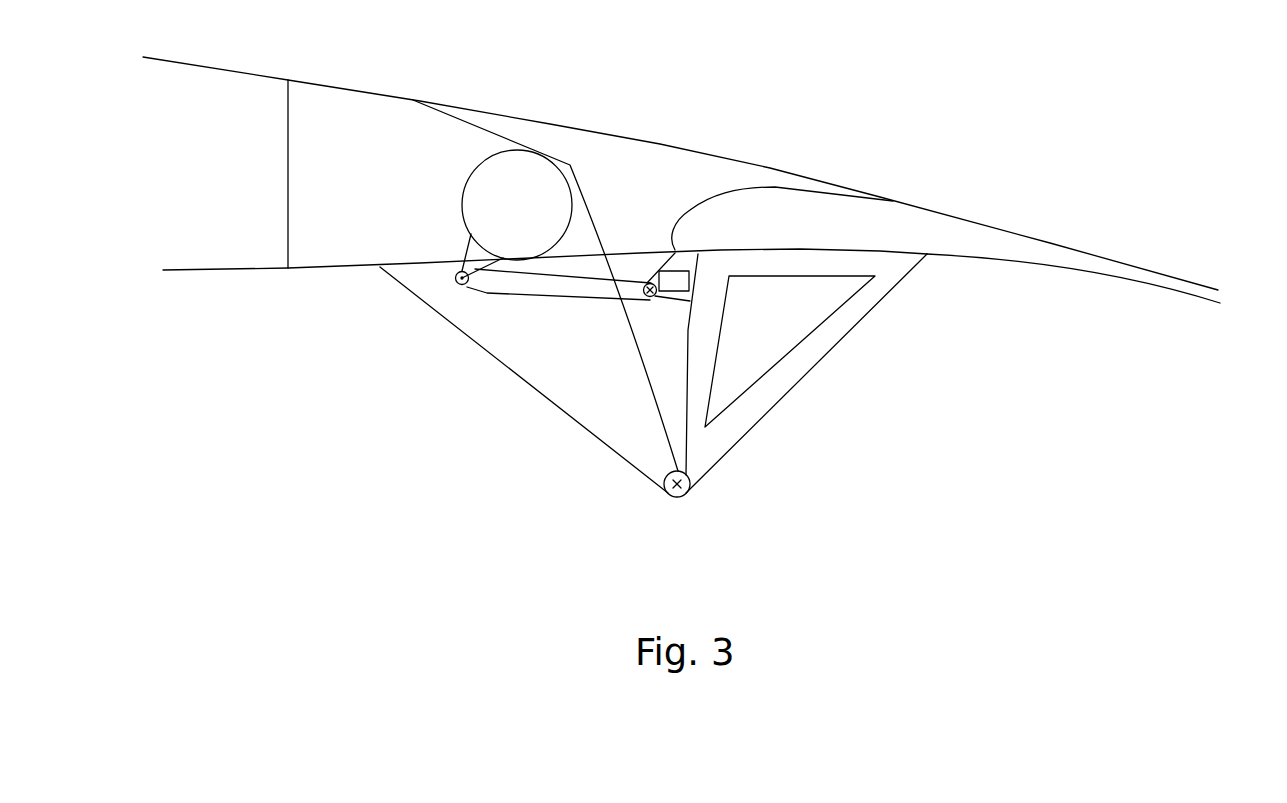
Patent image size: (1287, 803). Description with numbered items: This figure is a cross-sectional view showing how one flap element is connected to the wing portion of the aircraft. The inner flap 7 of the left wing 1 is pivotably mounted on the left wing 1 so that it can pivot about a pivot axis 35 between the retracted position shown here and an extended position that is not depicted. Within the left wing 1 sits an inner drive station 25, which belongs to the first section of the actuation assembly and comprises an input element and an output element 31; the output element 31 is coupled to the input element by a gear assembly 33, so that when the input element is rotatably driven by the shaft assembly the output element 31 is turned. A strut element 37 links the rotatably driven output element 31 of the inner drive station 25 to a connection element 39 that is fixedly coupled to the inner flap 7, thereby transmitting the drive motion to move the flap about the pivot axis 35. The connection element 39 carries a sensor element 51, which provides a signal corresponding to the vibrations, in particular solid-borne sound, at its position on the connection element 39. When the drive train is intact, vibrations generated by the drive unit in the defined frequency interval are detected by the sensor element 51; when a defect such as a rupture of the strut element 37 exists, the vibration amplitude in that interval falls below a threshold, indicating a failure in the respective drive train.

The left wing 1 is at (237, 188).
The inner flap 7 is at (833, 236).
The inner drive station 25 is at (436, 93).
The output element 31 is at (456, 268).
The gear assembly 33 is at (532, 216).
The pivot axis 35 is at (680, 497).
The strut element 37 is at (563, 290).
The connection element 39 is at (683, 300).
The sensor element 51 is at (683, 280).